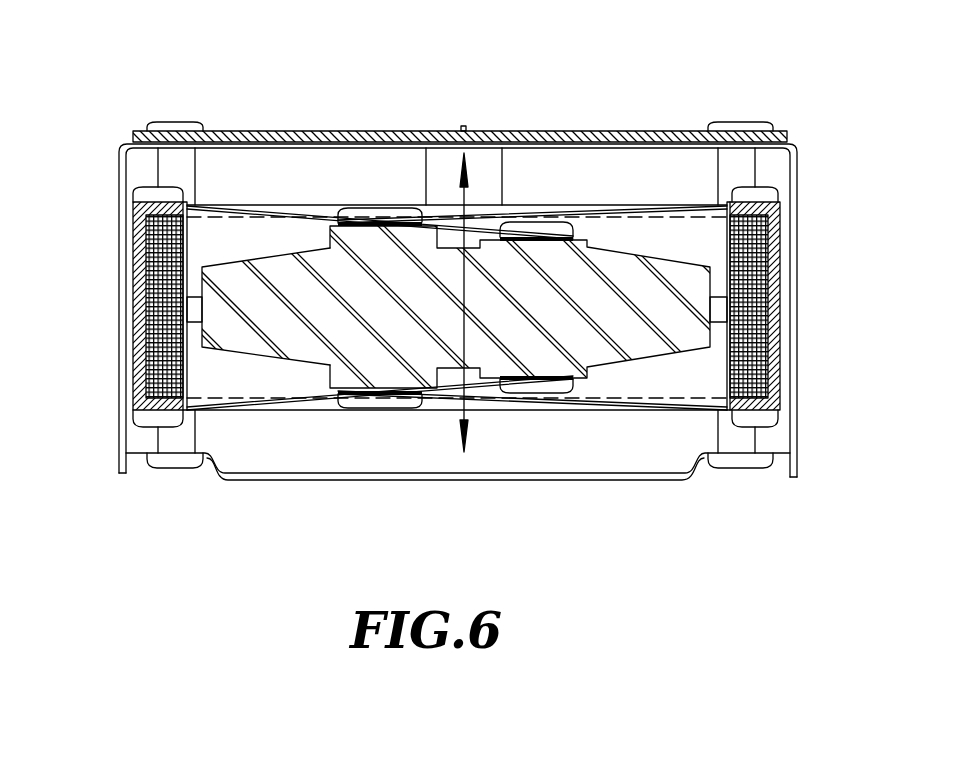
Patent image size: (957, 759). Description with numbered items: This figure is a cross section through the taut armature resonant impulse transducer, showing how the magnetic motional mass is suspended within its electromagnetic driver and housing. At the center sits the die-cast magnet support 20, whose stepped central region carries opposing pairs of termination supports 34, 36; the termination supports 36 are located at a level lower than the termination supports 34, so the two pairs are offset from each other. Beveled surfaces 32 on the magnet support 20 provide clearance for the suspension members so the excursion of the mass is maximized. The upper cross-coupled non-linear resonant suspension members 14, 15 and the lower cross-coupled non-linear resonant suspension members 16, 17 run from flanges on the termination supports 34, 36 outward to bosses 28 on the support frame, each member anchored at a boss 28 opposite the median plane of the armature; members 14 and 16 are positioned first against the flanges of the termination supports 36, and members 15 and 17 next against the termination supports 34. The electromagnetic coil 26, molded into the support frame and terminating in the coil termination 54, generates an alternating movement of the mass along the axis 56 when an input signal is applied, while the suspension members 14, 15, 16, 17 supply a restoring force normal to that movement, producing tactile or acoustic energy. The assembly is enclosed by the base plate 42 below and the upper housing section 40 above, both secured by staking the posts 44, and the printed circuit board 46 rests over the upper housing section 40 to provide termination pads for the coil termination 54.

The upper cross-coupled non-linear resonant suspension member 14 is at (228, 203).
The upper cross-coupled non-linear resonant suspension member 15 is at (662, 200).
The lower cross-coupled non-linear resonant suspension member 16 is at (226, 413).
The lower cross-coupled non-linear resonant suspension member 17 is at (643, 413).
The magnet support 20 is at (628, 322).
The electromagnetic coil 26 is at (142, 254).
The boss 28 is at (142, 189).
The beveled surface 32 is at (275, 358).
The termination support 34 is at (388, 207).
The termination support 36 is at (528, 222).
The upper housing section 40 is at (797, 145).
The base plate 42 is at (308, 482).
The post 44 is at (172, 121).
The printed circuit board 46 is at (777, 130).
The coil termination 54 is at (466, 126).
The axis 56 is at (458, 197).